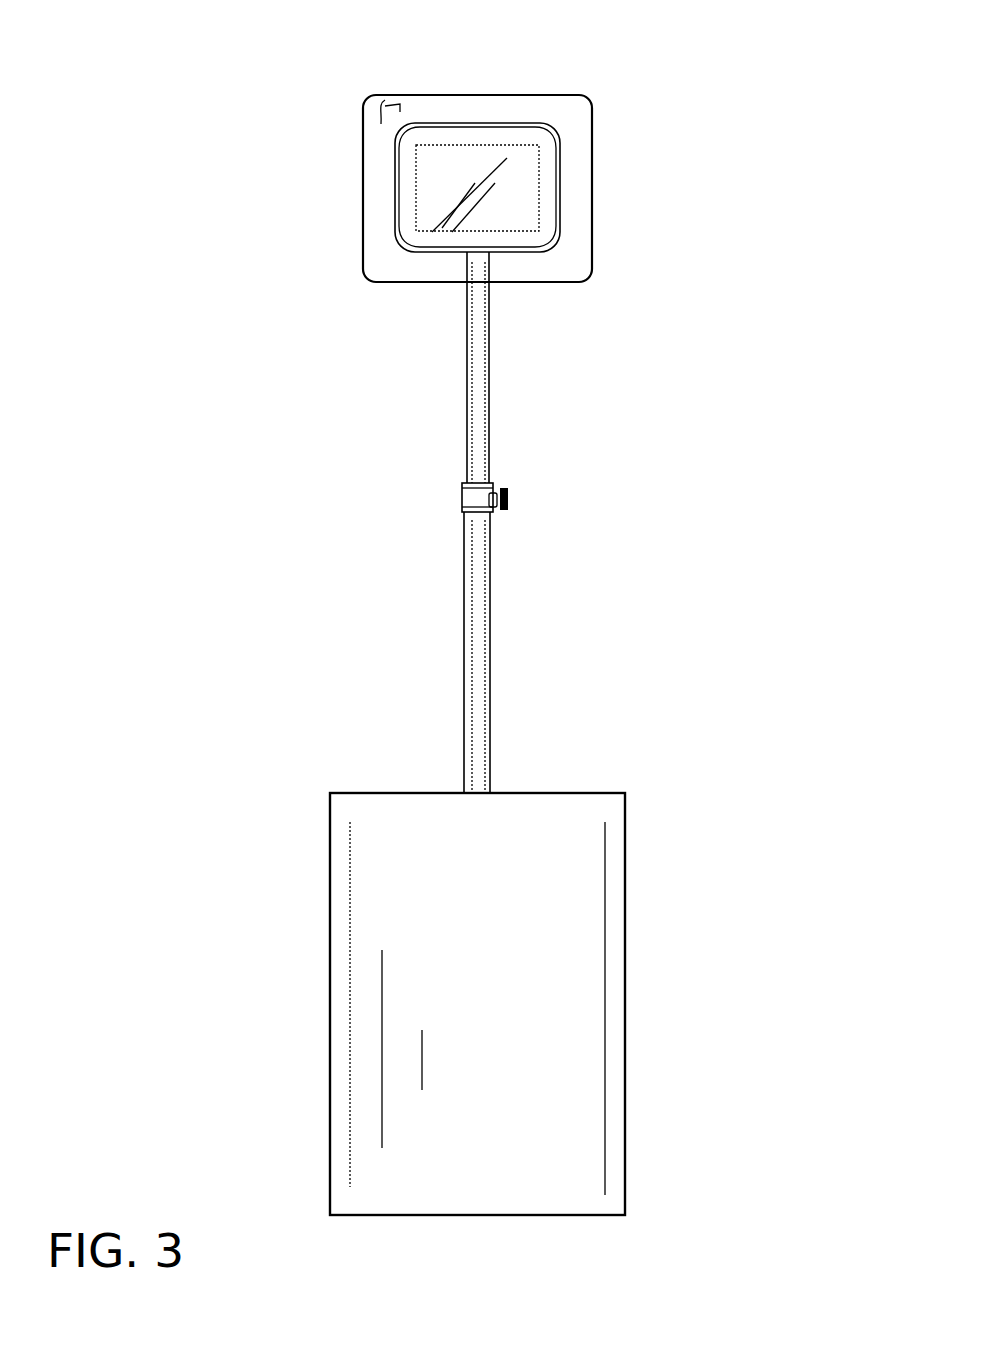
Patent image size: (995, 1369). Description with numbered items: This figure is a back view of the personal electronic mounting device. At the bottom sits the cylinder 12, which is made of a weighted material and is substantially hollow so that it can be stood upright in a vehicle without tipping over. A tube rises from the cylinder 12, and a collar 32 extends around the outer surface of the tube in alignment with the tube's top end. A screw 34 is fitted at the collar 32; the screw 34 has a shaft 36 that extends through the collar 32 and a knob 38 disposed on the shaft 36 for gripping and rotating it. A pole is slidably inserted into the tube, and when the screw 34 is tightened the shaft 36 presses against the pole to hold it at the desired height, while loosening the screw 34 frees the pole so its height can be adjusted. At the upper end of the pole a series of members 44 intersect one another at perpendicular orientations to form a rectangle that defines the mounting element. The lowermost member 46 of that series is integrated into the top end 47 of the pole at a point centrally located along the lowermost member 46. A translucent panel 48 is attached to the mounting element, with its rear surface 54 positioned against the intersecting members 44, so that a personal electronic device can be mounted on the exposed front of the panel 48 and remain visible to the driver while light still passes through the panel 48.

The cylinder 12 is at (645, 777).
The collar 32 is at (462, 497).
The screw 34 is at (538, 498).
The shaft 36 is at (498, 488).
The knob 38 is at (503, 510).
The series of members 44 is at (480, 123).
The lowermost member 46 is at (515, 250).
The top end of the pole 47 is at (477, 250).
The panel 48 is at (590, 98).
The rear surface 54 is at (388, 102).